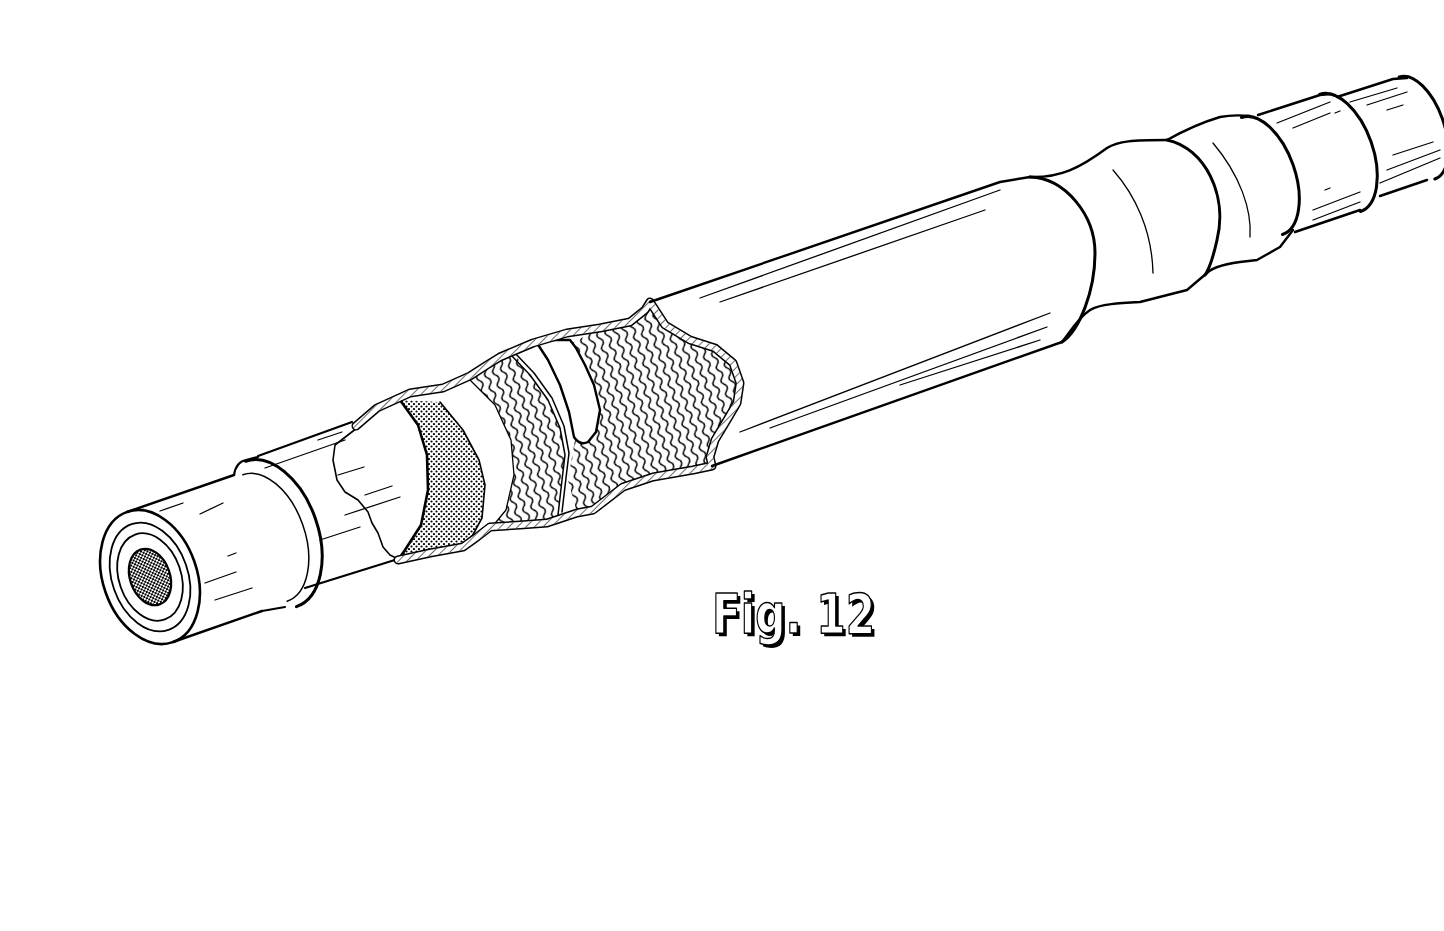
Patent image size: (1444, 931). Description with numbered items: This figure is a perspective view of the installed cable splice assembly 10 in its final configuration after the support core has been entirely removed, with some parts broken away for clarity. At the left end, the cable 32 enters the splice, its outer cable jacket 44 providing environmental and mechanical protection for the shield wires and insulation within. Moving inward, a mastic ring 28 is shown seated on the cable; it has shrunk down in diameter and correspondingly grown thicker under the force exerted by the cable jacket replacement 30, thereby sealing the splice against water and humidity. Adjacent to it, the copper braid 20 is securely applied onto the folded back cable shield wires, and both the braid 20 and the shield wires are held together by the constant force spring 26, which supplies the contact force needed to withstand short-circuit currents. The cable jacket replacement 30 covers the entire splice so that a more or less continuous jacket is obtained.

The cable splice assembly 10 is at (615, 225).
The copper braid 20 is at (680, 338).
The constant force spring 26 is at (533, 342).
The mastic rings 28 is at (408, 395).
The cable jacket replacement 30 is at (896, 318).
The cable 32 is at (180, 480).
The cable jacket 44 is at (243, 547).